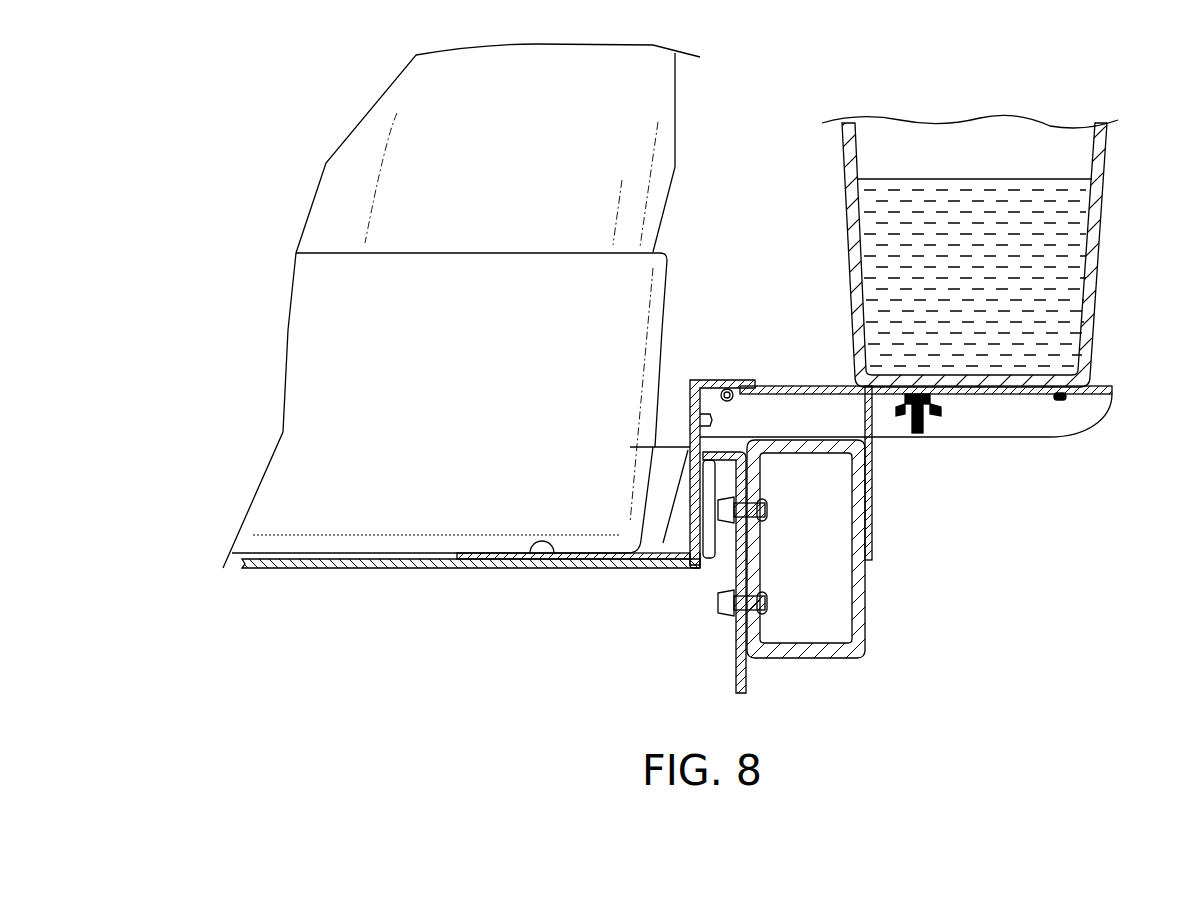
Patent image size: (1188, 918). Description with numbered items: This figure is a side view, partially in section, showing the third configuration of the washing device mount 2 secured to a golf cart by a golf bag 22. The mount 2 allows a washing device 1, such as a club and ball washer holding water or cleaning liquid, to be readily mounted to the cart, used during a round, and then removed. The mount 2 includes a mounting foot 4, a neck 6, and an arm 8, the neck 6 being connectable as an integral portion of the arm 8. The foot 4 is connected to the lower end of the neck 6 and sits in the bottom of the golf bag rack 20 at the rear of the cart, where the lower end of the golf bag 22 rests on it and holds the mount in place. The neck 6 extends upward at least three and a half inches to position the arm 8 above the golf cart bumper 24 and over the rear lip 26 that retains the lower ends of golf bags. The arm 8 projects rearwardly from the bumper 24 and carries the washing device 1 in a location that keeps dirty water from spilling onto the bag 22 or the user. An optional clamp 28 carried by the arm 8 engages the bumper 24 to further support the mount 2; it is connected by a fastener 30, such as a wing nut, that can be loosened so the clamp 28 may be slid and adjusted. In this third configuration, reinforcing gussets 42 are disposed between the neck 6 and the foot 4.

The washing device 1 is at (1095, 215).
The washing device mount 2 is at (787, 340).
The mounting foot 4 is at (527, 560).
The neck 6 is at (688, 405).
The arm 8 is at (1105, 385).
The golf bag rack 20 is at (357, 566).
The golf bag 22 is at (628, 125).
The golf cart bumper 24 is at (858, 605).
The rear lip 26 is at (712, 460).
The clamp 28 is at (868, 530).
The fastener 30 is at (935, 415).
The reinforcing gusset 42 is at (676, 540).